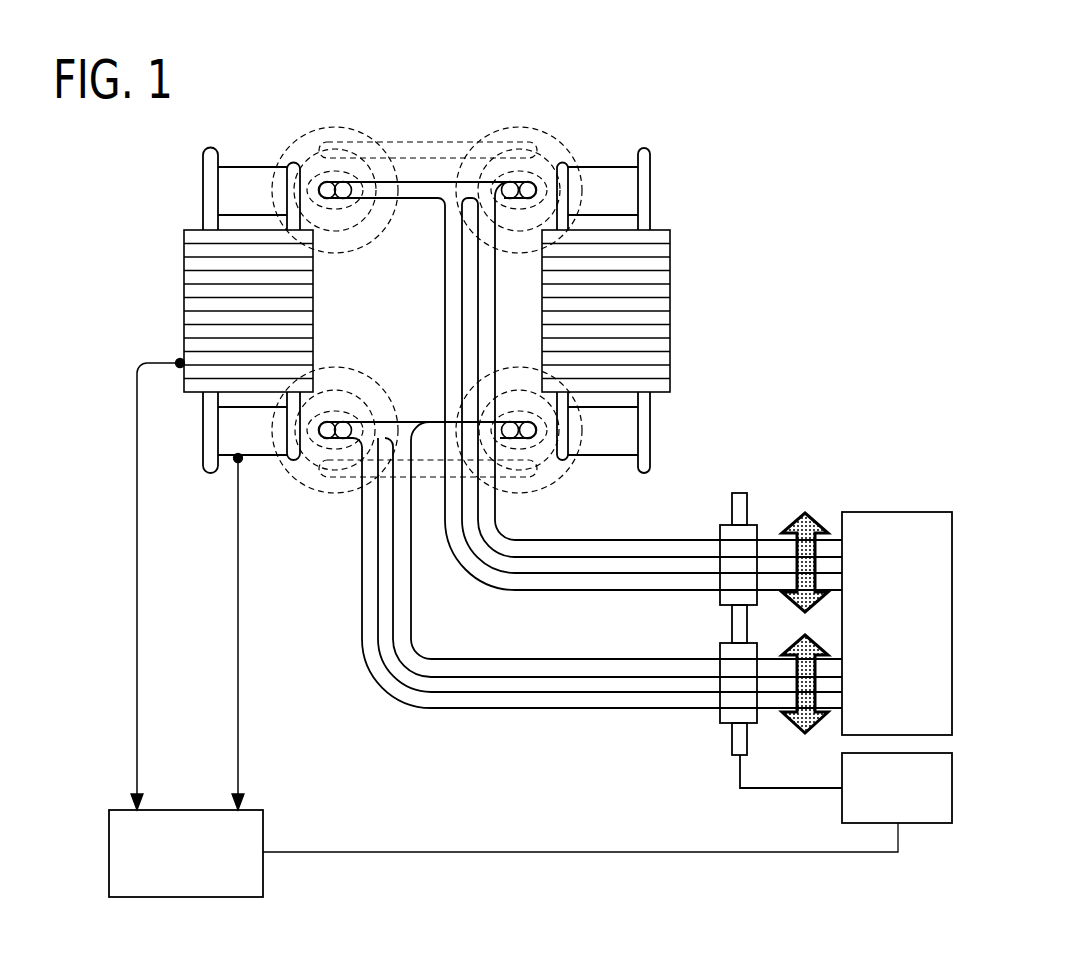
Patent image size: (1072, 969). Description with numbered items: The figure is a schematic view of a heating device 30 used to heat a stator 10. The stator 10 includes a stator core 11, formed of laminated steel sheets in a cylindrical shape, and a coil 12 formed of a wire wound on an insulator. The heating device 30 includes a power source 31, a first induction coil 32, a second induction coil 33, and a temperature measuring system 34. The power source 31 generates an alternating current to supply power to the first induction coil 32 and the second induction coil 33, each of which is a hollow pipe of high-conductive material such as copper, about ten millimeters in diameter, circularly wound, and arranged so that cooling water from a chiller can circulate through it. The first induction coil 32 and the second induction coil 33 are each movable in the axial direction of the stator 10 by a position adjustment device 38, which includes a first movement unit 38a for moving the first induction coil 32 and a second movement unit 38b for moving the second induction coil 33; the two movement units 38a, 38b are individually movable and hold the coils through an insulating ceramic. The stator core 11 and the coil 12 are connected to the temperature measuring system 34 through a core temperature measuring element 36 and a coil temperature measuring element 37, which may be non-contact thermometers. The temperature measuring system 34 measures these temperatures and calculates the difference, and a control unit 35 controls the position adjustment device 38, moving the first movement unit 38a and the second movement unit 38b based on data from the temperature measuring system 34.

The stator 10 is at (476, 288).
The stator core 11 is at (660, 240).
The coil 12 is at (622, 152).
The heating device 30 is at (646, 473).
The power source 31 is at (947, 587).
The first induction coil 32 is at (522, 183).
The second induction coil 33 is at (333, 440).
The temperature measuring system 34 is at (258, 833).
The control unit 35 is at (949, 790).
The core temperature measuring element 36 is at (178, 362).
The coil temperature measuring element 37 is at (239, 500).
The position adjustment device 38 is at (745, 649).
The first movement unit 38a is at (722, 525).
The second movement unit 38b is at (722, 720).